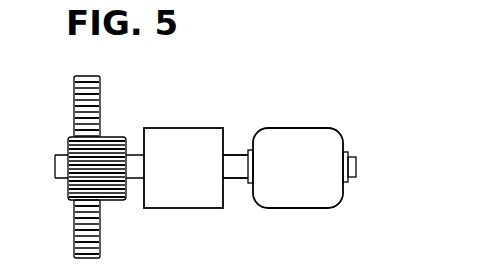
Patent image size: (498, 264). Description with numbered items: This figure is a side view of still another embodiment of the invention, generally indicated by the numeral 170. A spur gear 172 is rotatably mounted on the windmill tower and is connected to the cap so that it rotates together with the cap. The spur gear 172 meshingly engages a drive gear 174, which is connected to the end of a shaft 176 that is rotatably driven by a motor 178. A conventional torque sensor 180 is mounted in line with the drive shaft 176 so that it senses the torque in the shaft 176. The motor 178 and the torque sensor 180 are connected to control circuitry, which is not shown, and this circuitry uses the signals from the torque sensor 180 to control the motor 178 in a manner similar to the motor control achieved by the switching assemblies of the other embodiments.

The embodiment 170 is at (143, 111).
The spur gear 172 is at (78, 98).
The drive gear 174 is at (84, 157).
The shaft 176 is at (236, 155).
The motor 178 is at (310, 140).
The torque sensor 180 is at (199, 133).